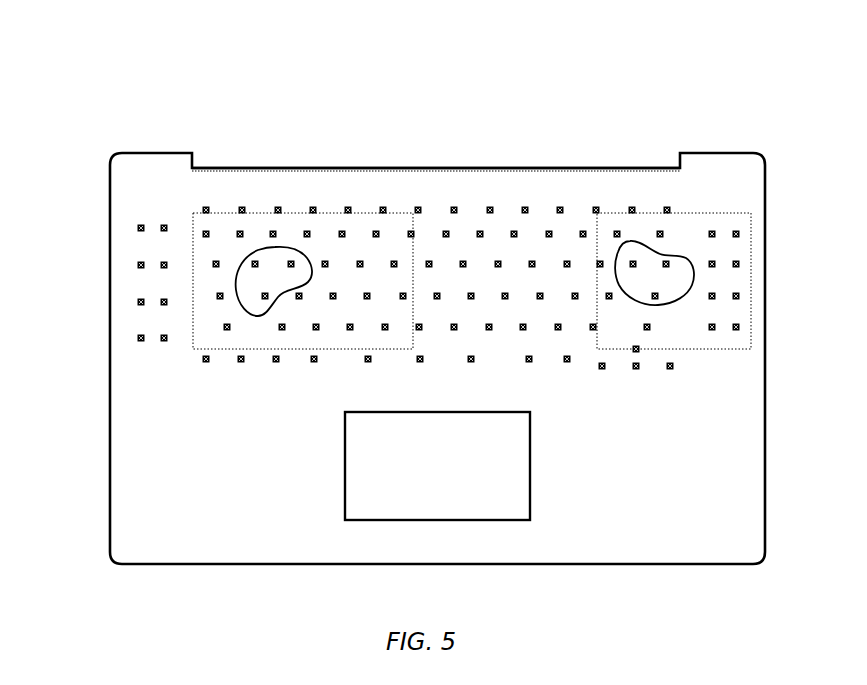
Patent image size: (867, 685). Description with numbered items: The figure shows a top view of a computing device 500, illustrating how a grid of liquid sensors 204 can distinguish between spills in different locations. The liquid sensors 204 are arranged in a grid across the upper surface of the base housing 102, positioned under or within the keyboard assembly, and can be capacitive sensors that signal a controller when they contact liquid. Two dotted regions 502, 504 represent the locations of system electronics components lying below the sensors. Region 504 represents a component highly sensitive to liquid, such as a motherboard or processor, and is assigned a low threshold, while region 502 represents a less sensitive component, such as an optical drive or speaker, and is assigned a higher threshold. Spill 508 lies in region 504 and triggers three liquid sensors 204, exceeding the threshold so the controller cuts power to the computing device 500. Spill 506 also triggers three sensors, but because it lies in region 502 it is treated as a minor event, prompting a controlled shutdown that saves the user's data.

The computing device 500 is at (160, 97).
The base housing 102 is at (303, 168).
The liquid sensors 204 is at (455, 207).
The region 502 is at (645, 214).
The region 504 is at (193, 243).
The spill 506 is at (680, 256).
The spill 508 is at (240, 301).